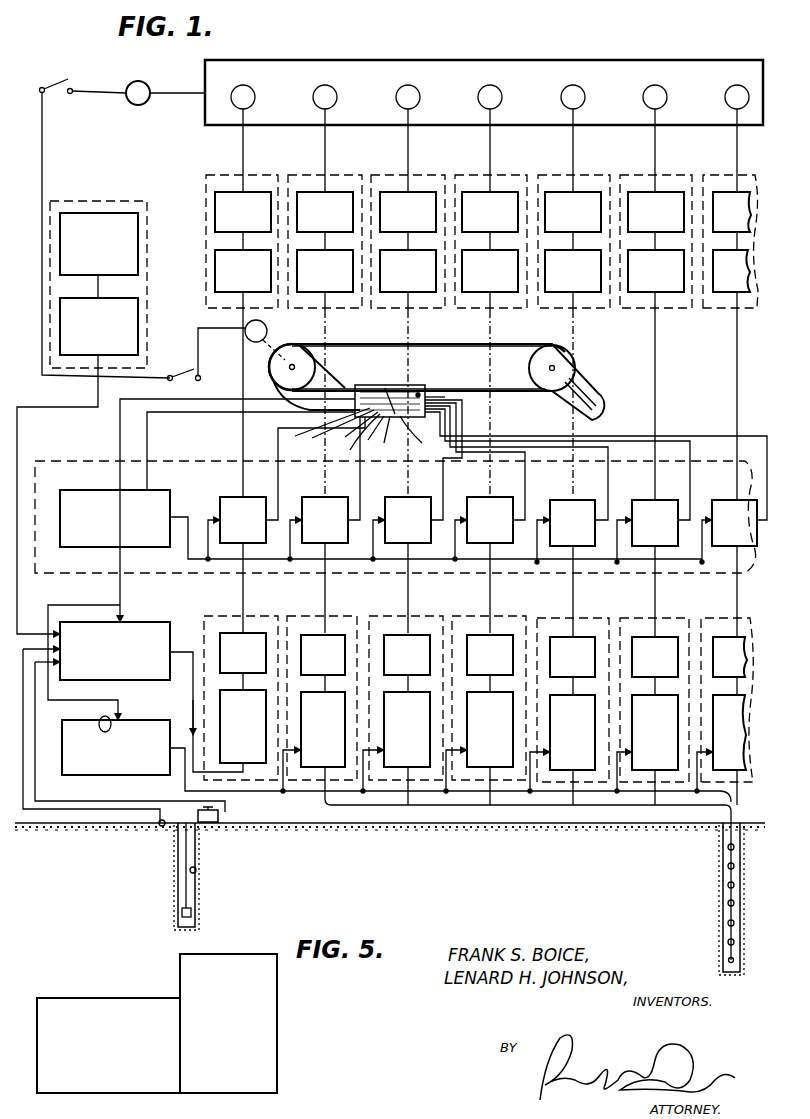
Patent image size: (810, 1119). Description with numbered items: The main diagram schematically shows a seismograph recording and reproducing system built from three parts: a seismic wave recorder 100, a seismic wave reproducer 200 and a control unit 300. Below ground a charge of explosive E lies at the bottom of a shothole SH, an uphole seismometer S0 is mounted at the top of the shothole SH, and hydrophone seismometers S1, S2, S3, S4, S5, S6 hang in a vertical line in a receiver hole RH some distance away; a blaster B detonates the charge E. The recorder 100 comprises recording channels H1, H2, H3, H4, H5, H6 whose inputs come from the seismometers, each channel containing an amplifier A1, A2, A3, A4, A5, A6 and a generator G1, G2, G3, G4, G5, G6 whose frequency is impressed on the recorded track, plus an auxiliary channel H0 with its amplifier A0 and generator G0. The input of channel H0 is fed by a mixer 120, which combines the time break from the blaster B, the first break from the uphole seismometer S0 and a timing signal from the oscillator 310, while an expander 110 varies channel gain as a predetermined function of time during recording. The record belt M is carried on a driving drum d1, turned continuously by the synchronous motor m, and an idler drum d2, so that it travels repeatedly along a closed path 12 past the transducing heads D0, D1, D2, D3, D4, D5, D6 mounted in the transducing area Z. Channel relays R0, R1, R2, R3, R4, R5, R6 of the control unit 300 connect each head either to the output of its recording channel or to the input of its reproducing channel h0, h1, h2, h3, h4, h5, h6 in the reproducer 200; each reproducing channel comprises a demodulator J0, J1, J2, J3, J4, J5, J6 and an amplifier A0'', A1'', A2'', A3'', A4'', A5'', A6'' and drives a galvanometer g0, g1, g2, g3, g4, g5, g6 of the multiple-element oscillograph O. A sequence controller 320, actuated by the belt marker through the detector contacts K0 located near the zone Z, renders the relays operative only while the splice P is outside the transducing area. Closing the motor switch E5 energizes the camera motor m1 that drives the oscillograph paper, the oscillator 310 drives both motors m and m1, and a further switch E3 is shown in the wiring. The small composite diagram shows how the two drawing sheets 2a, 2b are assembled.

In FIG. 1, the multiple-element oscillograph O is at (548, 60).
In FIG. 1, the motor switch E5 is at (78, 80).
In FIG. 1, the camera motor m1 is at (132, 103).
In FIG. 1, the oscillator 310 is at (146, 278).
In FIG. 1, the switch E3 is at (207, 354).
In FIG. 1, the seismic wave reproducer 200 is at (455, 156).
In FIG. 1, the auxiliary galvanometer element g0 is at (243, 138).
In FIG. 1, the galvanometer recording element g1 is at (325, 138).
In FIG. 1, the galvanometer recording element g2 is at (408, 138).
In FIG. 1, the galvanometer recording element g3 is at (490, 138).
In FIG. 1, the galvanometer recording element g4 is at (573, 138).
In FIG. 1, the galvanometer recording element g5 is at (655, 138).
In FIG. 1, the galvanometer recording element g6 is at (737, 138).
In FIG. 1, the auxiliary reproducing channel h0 is at (223, 175).
In FIG. 1, the reproducing channel h1 is at (316, 175).
In FIG. 1, the reproducing channel h2 is at (399, 175).
In FIG. 1, the reproducing channel h3 is at (482, 175).
In FIG. 1, the reproducing channel h4 is at (563, 175).
In FIG. 1, the reproducing channel h5 is at (653, 175).
In FIG. 1, the reproducing channel h6 is at (710, 178).
In FIG. 1, the amplifier A0'' is at (243, 212).
In FIG. 1, the amplifier A1'' is at (325, 212).
In FIG. 1, the amplifier A2'' is at (408, 212).
In FIG. 1, the amplifier A3'' is at (490, 212).
In FIG. 1, the amplifier A4'' is at (573, 212).
In FIG. 1, the amplifier A5'' is at (656, 212).
In FIG. 1, the amplifier A6'' is at (732, 212).
In FIG. 1, the demodulator J0 is at (243, 364).
In FIG. 1, the demodulator J1 is at (325, 364).
In FIG. 1, the demodulator J2 is at (408, 364).
In FIG. 1, the demodulator J3 is at (490, 364).
In FIG. 1, the demodulator J4 is at (573, 364).
In FIG. 1, the demodulator J5 is at (656, 366).
In FIG. 1, the demodulator J6 is at (731, 366).
In FIG. 1, the synchronous motor m is at (265, 340).
In FIG. 1, the driving drum d1 is at (270, 375).
In FIG. 1, the idler drum d2 is at (567, 356).
In FIG. 1, the record belt M is at (380, 340).
In FIG. 1, the closed path 12 is at (372, 342).
In FIG. 1, the transducing area Z is at (440, 405).
In FIG. 1, the splice P is at (390, 388).
In FIG. 1, the detector contacts K0 is at (420, 393).
In FIG. 1, the sequence controller 320 is at (160, 490).
In FIG. 1, the control unit 300 is at (62, 461).
In FIG. 1, the seismic wave recorder 100 is at (470, 593).
In FIG. 1, the auxiliary transducing head D0 is at (448, 397).
In FIG. 1, the transducing head D1 is at (462, 400).
In FIG. 1, the transducing head D2 is at (458, 404).
In FIG. 1, the transducing head D3 is at (452, 407).
In FIG. 1, the transducing head D4 is at (447, 410).
In FIG. 1, the transducing head D5 is at (467, 420).
In FIG. 1, the transducing head D6 is at (460, 425).
In FIG. 1, the channel relay R0 is at (285, 525).
In FIG. 1, the channel relay R1 is at (324, 525).
In FIG. 1, the channel relay R2 is at (416, 516).
In FIG. 1, the channel relay R3 is at (475, 518).
In FIG. 1, the channel relay R4 is at (516, 521).
In FIG. 1, the channel relay R5 is at (557, 523).
In FIG. 1, the channel relay R6 is at (596, 524).
In FIG. 1, the auxiliary recording channel H0 is at (229, 616).
In FIG. 1, the recording channel H1 is at (311, 616).
In FIG. 1, the recording channel H2 is at (394, 616).
In FIG. 1, the recording channel H3 is at (475, 616).
In FIG. 1, the recording channel H4 is at (558, 618).
In FIG. 1, the recording channel H5 is at (637, 618).
In FIG. 1, the recording channel H6 is at (718, 618).
In FIG. 1, the generator G0 is at (243, 661).
In FIG. 1, the generator G1 is at (323, 663).
In FIG. 1, the generator G2 is at (407, 663).
In FIG. 1, the generator G3 is at (490, 663).
In FIG. 1, the generator G4 is at (572, 666).
In FIG. 1, the generator G5 is at (655, 666).
In FIG. 1, the generator G6 is at (730, 666).
In FIG. 1, the amplifier A0 is at (218, 712).
In FIG. 1, the amplifier A1 is at (503, 748).
In FIG. 1, the amplifier A2 is at (395, 748).
In FIG. 1, the amplifier A3 is at (478, 748).
In FIG. 1, the amplifier A4 is at (561, 750).
In FIG. 1, the amplifier A5 is at (646, 750).
In FIG. 1, the amplifier A6 is at (720, 750).
In FIG. 1, the mixer 120 is at (155, 622).
In FIG. 1, the expander 110 is at (155, 722).
In FIG. 1, the blaster B is at (220, 814).
In FIG. 1, the uphole seismometer S0 is at (160, 828).
In FIG. 1, the shothole SH is at (197, 870).
In FIG. 1, the explosive charge E is at (192, 912).
In FIG. 1, the receiver hole RH is at (724, 915).
In FIG. 1, the hydrophone seismometer S1 is at (727, 847).
In FIG. 1, the hydrophone seismometer S2 is at (727, 866).
In FIG. 1, the hydrophone seismometer S3 is at (727, 885).
In FIG. 1, the hydrophone seismometer S4 is at (727, 903).
In FIG. 1, the hydrophone seismometer S5 is at (727, 923).
In FIG. 1, the hydrophone seismometer S6 is at (727, 942).
In FIG. 5, the drawing sheet 2a is at (108, 1045).
In FIG. 5, the drawing sheet 2b is at (228, 1023).